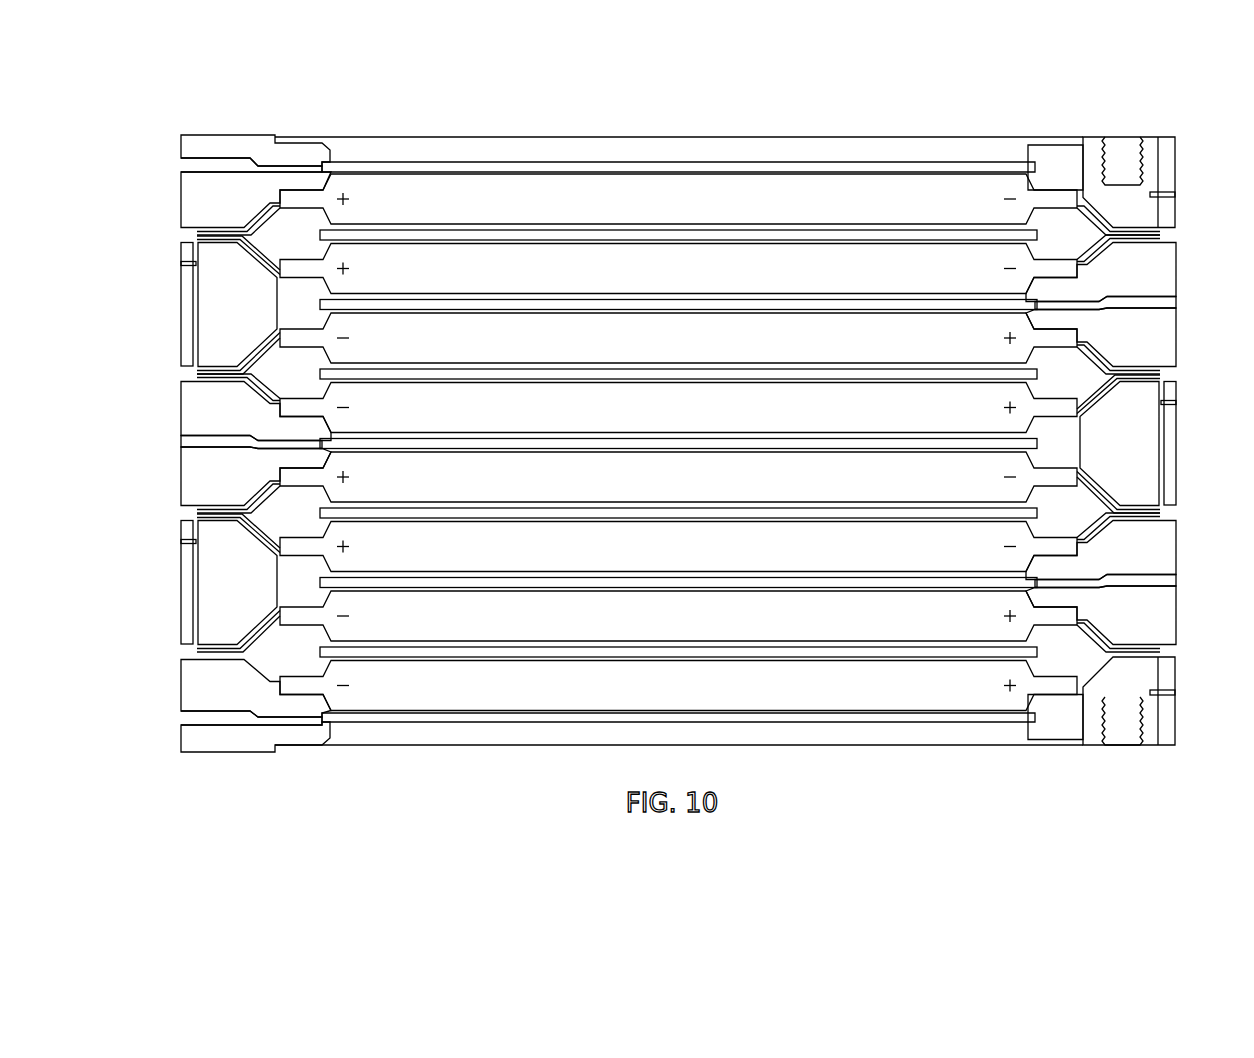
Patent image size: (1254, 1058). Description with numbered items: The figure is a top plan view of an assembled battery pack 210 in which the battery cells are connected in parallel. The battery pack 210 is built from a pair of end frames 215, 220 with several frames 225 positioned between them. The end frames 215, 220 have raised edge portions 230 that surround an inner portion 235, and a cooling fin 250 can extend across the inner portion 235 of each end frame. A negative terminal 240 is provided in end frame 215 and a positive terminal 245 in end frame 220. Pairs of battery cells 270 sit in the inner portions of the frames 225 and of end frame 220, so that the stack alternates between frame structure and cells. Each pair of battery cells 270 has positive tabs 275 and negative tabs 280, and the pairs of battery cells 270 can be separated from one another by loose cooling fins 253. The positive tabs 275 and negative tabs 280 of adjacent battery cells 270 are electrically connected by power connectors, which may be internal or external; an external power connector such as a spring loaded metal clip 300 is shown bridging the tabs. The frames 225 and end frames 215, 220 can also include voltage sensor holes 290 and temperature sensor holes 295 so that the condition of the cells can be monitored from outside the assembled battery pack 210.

The battery pack 210 is at (185, 99).
The end frame 215 is at (182, 184).
The end frame 220 is at (182, 667).
The frame 225 is at (182, 327).
The raised edge portion 230 is at (232, 134).
The inner portion 235 is at (513, 142).
The negative terminal 240 is at (1128, 136).
The positive terminal 245 is at (1133, 746).
The cooling fin 250 is at (839, 161).
The loose cooling fin 253 is at (1040, 235).
The battery cell 270 is at (875, 214).
The positive tab 275 is at (216, 228).
The negative tab 280 is at (230, 365).
The voltage sensor hole 290 is at (180, 264).
The temperature sensor hole 295 is at (180, 165).
The spring loaded metal clip 300 is at (180, 290).